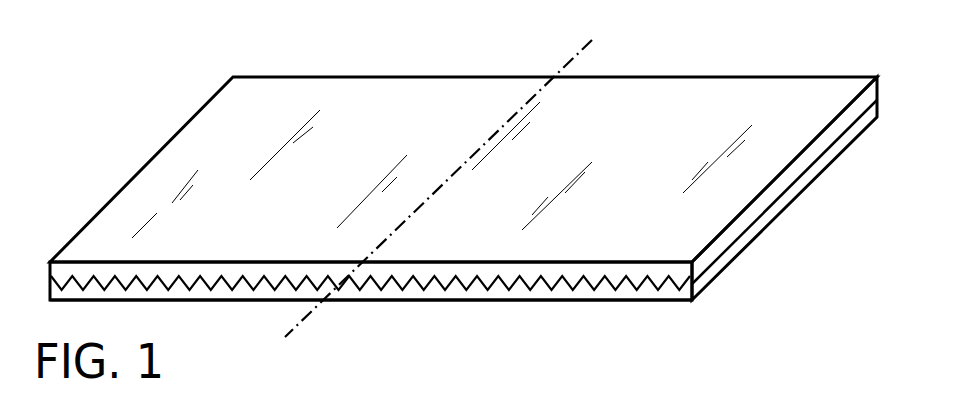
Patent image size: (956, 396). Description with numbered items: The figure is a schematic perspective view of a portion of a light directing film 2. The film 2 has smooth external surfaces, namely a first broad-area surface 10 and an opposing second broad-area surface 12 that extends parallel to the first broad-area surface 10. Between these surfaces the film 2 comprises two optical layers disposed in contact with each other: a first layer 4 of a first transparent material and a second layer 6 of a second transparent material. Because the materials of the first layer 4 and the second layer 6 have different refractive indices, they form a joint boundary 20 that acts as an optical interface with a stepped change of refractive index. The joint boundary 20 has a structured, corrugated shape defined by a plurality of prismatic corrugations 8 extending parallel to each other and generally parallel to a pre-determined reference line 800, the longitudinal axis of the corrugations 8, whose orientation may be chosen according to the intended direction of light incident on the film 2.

The light directing film 2 is at (463, 182).
The first layer 4 is at (318, 275).
The second layer 6 is at (407, 292).
The prismatic corrugations 8 is at (217, 281).
The first broad-area surface 10 is at (388, 95).
The second broad-area surface 12 is at (527, 300).
The joint boundary 20 is at (698, 296).
The reference line 800 is at (552, 76).